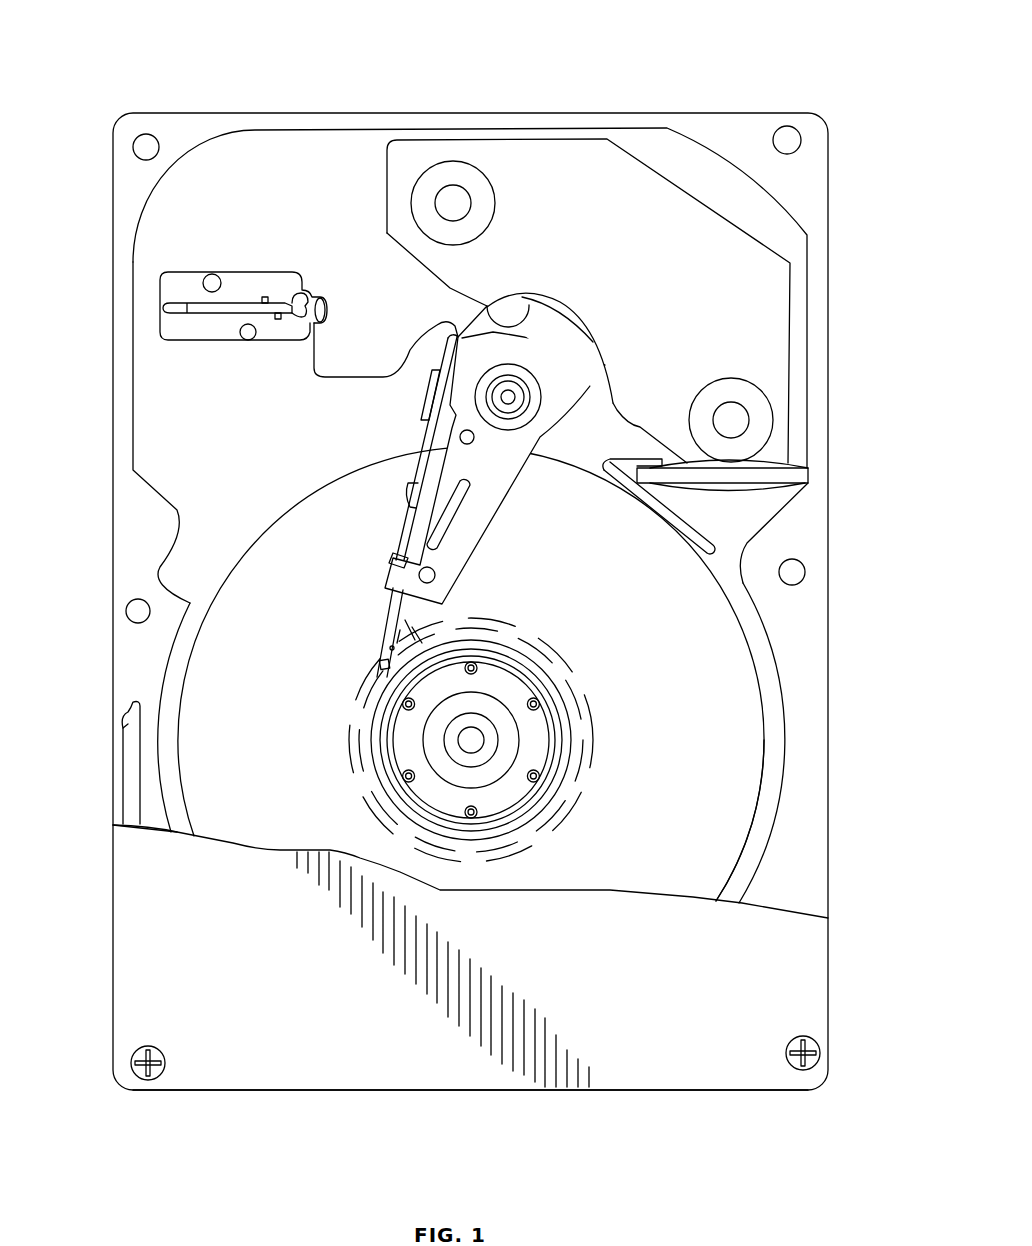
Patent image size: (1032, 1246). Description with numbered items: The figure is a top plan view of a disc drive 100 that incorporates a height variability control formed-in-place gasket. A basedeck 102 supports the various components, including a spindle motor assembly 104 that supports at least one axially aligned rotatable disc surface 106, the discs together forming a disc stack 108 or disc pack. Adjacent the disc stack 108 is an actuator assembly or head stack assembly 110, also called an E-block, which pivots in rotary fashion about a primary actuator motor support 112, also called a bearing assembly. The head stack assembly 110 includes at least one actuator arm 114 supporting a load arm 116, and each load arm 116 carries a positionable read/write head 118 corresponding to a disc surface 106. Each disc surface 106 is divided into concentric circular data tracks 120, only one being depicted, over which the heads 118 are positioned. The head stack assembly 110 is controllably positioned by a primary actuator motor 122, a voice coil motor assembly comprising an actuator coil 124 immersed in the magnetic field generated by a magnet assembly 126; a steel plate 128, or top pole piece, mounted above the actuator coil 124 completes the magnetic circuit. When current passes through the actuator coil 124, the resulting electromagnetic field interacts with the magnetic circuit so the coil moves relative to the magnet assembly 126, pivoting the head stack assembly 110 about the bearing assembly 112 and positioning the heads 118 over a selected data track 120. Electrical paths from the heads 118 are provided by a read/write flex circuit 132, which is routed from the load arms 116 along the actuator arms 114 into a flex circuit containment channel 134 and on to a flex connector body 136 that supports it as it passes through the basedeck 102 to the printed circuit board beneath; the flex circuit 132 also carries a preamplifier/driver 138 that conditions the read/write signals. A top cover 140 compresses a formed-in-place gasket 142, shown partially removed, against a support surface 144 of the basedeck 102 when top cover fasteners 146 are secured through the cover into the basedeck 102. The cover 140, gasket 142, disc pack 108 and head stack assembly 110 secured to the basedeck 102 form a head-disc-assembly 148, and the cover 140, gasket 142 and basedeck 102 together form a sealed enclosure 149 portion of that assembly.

The disc drive 100 is at (378, 92).
The basedeck 102 is at (305, 177).
The spindle motor assembly 104 is at (512, 697).
The disc surface 106 is at (667, 618).
The disc stack 108 is at (765, 759).
The actuator assembly 110 is at (439, 503).
The primary actuator motor support 112 is at (550, 391).
The actuator arm 114 is at (442, 565).
The load arm 116 is at (387, 630).
The read/write head 118 is at (378, 670).
The data track 120 is at (560, 805).
The primary actuator motor 122 is at (773, 257).
The actuator coil 124 is at (513, 312).
The magnet assembly 126 is at (537, 166).
The steel plate 128 is at (762, 347).
The read/write flex circuit 132 is at (314, 370).
The flex circuit containment channel 134 is at (407, 485).
The flex connector body 136 is at (172, 337).
The preamplifier/driver 138 is at (420, 406).
The top cover 140 is at (178, 908).
The formed-in-place gasket 142 is at (122, 732).
The support surface 144 is at (140, 668).
The top cover fasteners 146 is at (815, 1038).
The head-disc-assembly 148 is at (650, 108).
The enclosure 149 is at (328, 1090).